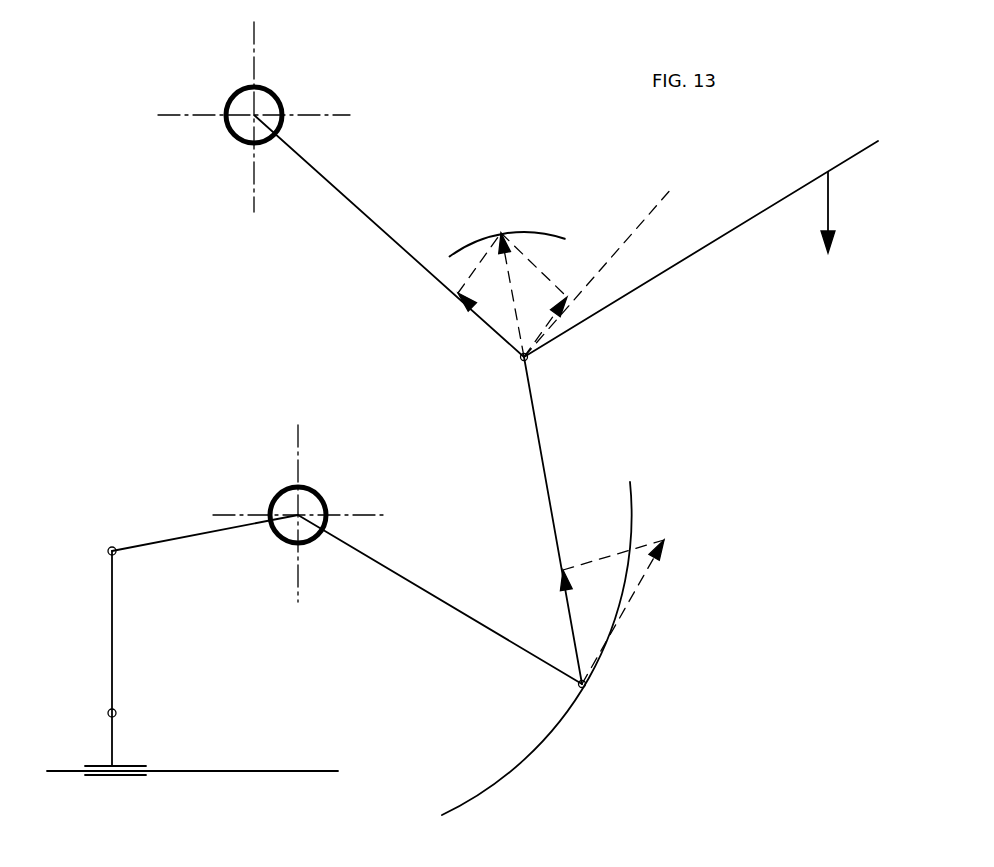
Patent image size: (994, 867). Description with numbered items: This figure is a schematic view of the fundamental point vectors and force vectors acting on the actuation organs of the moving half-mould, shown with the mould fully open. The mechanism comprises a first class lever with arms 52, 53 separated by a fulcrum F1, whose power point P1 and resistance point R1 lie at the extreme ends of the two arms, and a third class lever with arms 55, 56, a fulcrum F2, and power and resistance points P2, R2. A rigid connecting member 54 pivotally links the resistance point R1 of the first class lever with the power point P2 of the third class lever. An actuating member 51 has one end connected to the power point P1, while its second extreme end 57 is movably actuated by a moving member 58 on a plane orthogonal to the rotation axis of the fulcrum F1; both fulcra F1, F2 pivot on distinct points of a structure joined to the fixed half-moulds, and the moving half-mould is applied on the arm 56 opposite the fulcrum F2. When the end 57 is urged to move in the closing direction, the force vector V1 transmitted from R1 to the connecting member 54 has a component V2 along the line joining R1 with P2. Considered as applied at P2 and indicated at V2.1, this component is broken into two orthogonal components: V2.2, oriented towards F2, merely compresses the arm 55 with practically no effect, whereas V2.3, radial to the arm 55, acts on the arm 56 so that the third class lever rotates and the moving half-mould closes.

The actuating member 51 is at (112, 622).
The arm of first class lever 52 is at (177, 538).
The arm of first class lever 53 is at (503, 638).
The rigid connecting member 54 is at (555, 524).
The arm of third class lever 55 is at (400, 224).
The arm of third class lever 56 is at (722, 232).
The second extreme end 57 is at (116, 713).
The moving member 58 is at (115, 738).
The fulcrum of first class lever F1 is at (318, 483).
The fulcrum of third class lever F2 is at (278, 97).
The power point of first class lever P1 is at (112, 547).
The power point of third class lever P2 is at (518, 363).
The resistance point of first class lever R1 is at (587, 691).
The resistance point of third class lever R2 is at (828, 172).
The force vector V1 is at (623, 612).
The force component V2 is at (569, 624).
The force component applied at P2 V2.1 is at (510, 277).
The force component oriented towards F2 V2.2 is at (475, 313).
The radial force component V2.3 is at (552, 317).